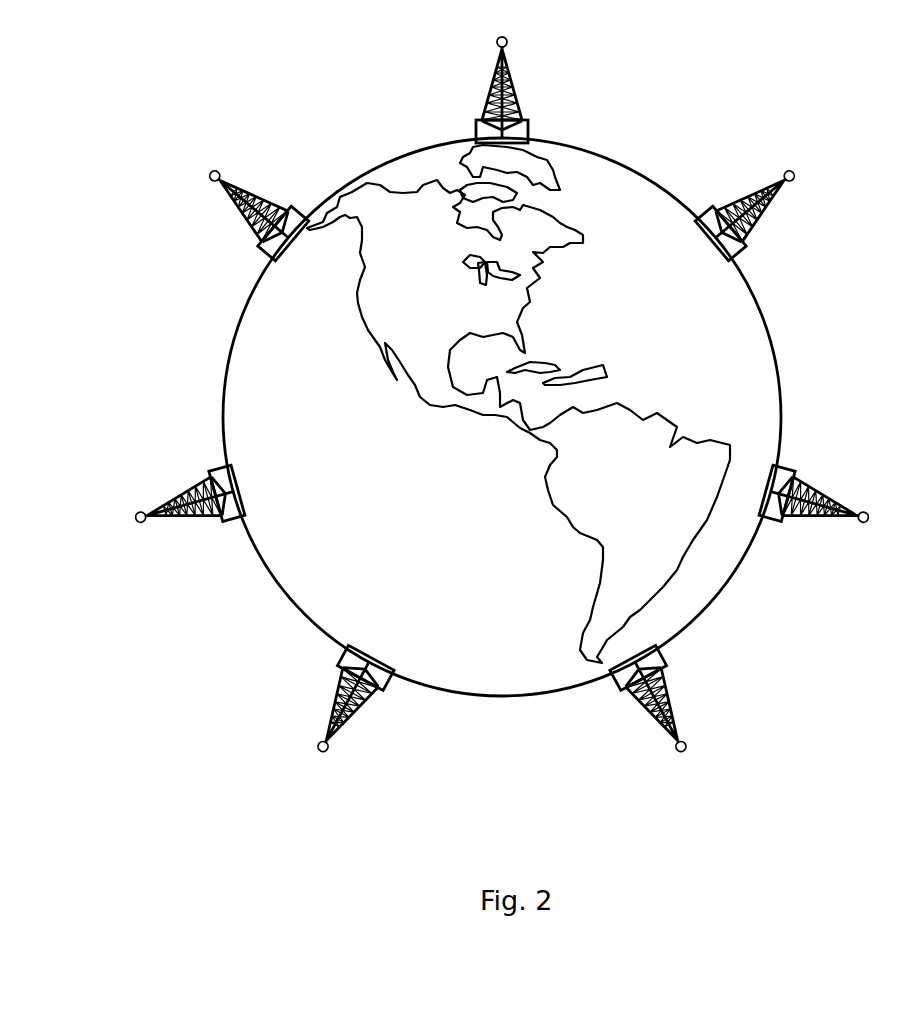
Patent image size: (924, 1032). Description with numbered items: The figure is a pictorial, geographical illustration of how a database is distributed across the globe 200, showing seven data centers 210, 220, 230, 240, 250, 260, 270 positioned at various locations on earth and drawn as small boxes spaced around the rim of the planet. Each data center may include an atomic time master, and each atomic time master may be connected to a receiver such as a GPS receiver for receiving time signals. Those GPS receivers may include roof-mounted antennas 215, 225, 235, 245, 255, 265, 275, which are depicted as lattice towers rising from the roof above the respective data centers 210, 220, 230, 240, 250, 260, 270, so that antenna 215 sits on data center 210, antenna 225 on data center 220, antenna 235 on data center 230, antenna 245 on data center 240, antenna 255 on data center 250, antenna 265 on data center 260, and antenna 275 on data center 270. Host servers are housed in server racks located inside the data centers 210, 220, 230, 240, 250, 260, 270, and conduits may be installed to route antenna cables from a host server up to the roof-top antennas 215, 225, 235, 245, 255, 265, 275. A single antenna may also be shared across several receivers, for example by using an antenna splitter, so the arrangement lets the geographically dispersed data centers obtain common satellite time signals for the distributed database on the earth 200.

The Earth / globe 200 is at (622, 162).
The data center 210 is at (793, 473).
The roof-mounted antenna 215 is at (803, 517).
The data center 220 is at (617, 690).
The roof-mounted antenna 225 is at (664, 697).
The data center 230 is at (387, 690).
The roof-mounted antenna 235 is at (340, 697).
The data center 240 is at (215, 472).
The roof-mounted antenna 245 is at (202, 513).
The data center 250 is at (258, 247).
The roof-mounted antenna 255 is at (243, 192).
The data center 260 is at (528, 128).
The roof-mounted antenna 265 is at (494, 76).
The data center 270 is at (746, 247).
The roof-mounted antenna 275 is at (761, 192).